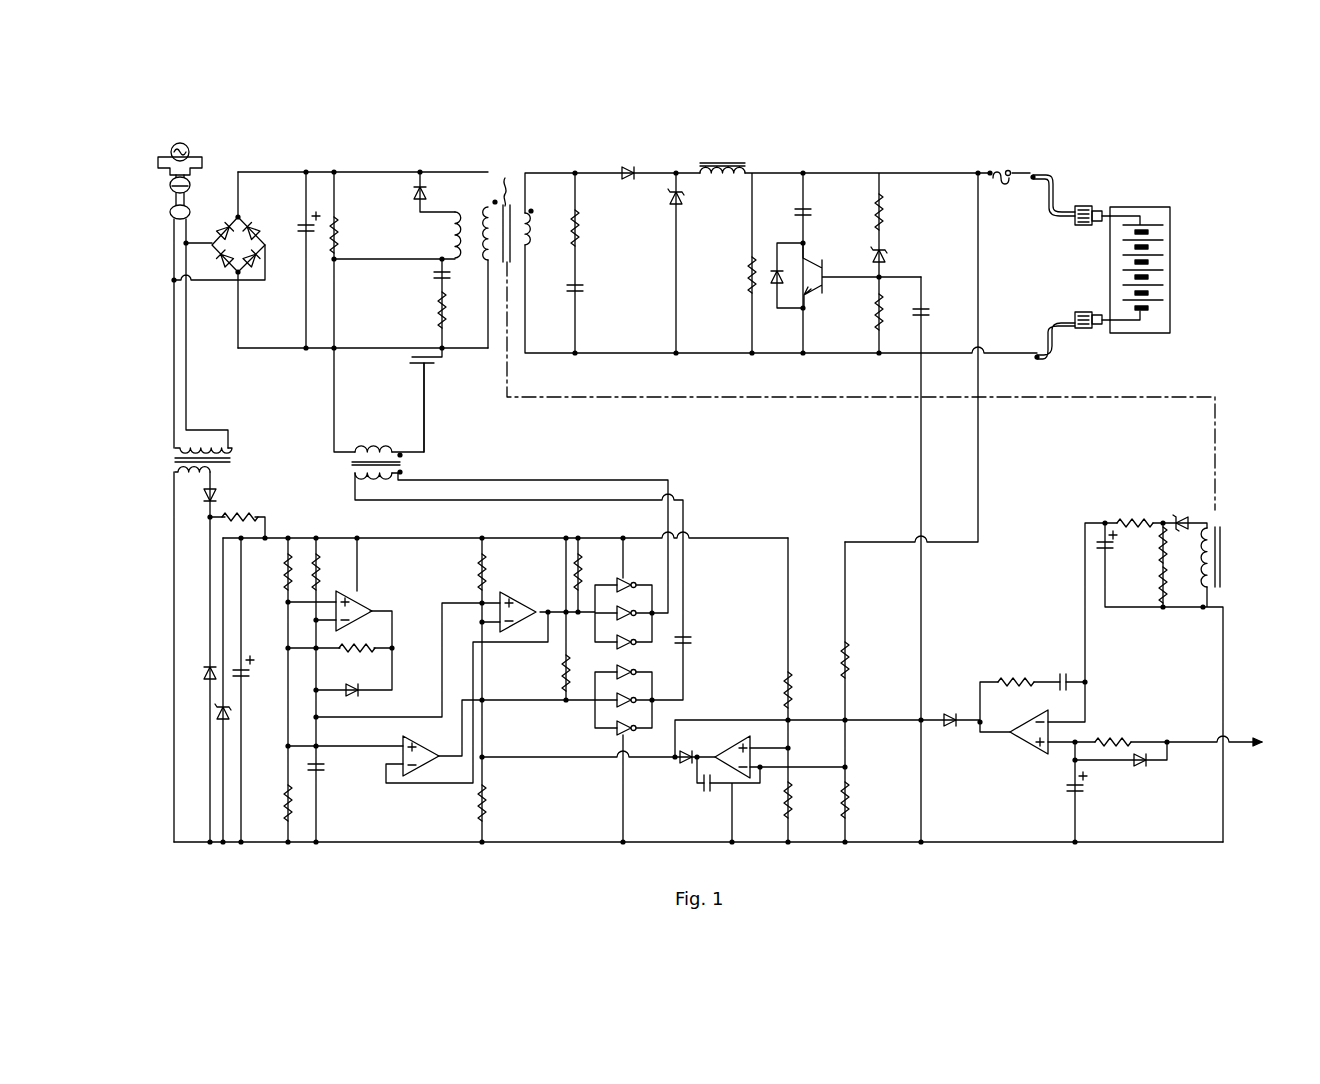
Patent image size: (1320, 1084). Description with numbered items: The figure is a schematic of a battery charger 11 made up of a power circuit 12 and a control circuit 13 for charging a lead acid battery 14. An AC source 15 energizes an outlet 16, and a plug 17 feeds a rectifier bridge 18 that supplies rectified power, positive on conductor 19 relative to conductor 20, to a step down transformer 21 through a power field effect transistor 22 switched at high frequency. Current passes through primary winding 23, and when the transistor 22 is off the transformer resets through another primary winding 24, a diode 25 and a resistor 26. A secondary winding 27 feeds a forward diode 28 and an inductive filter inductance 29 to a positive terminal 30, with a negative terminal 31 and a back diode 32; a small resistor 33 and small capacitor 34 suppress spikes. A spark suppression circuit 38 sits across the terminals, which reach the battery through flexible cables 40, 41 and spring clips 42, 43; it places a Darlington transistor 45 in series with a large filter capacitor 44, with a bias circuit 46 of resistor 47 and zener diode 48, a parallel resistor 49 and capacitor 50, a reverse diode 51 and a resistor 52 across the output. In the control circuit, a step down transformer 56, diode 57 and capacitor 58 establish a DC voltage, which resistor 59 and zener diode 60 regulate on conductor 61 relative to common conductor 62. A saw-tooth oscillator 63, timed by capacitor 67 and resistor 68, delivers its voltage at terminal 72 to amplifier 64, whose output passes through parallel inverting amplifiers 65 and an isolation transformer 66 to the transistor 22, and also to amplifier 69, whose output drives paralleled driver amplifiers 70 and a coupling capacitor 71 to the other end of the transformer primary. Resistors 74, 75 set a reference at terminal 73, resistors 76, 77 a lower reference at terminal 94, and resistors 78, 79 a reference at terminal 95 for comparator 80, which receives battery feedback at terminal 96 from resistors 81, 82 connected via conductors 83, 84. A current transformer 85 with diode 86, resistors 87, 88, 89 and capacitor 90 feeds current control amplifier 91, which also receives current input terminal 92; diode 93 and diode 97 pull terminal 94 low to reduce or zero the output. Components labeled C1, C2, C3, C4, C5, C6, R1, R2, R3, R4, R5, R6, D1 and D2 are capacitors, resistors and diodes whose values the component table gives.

The battery charger 11 is at (837, 477).
The power circuit 12 is at (592, 164).
The control circuit 13 is at (993, 863).
The battery 14 is at (1175, 255).
The AC source 15 is at (190, 154).
The outlet 16 is at (190, 187).
The plug 17 is at (190, 215).
The rectifier bridge 18 is at (238, 244).
The conductor 19 is at (282, 172).
The conductor 20 is at (258, 348).
The step down transformer 21 is at (510, 160).
The power field effect transistor 22 is at (428, 367).
The primary winding 23 is at (483, 258).
The primary winding 24 is at (452, 234).
The diode 25 is at (414, 198).
The resistor 26 is at (340, 218).
The secondary winding 27 is at (530, 228).
The forward diode 28 is at (630, 185).
The inductive filter inductance 29 is at (750, 170).
The charger positive terminal 30 is at (1038, 172).
The negative terminal 31 is at (1040, 360).
The back diode 32 is at (685, 200).
The small resistor 33 is at (582, 228).
The small capacitor 34 is at (582, 290).
The spark suppression circuit 38 is at (855, 234).
The flexible cable 40 is at (1062, 205).
The flexible cable 41 is at (1062, 337).
The spring battery clip 42 is at (1092, 207).
The spring battery clip 43 is at (1084, 312).
The filter capacitor 44 is at (808, 210).
The semi-conductor switch 45 is at (825, 268).
The bias circuit 46 is at (932, 254).
The resistor 47 is at (884, 215).
The zener diode 48 is at (884, 258).
The resistor 49 is at (876, 315).
The capacitor 50 is at (927, 308).
The diode 51 is at (772, 280).
The resistor 52 is at (748, 275).
The step down transformer 56 is at (240, 461).
The diode 57 is at (218, 493).
The capacitor 58 is at (207, 665).
The resistor 59 is at (245, 510).
The zener diode 60 is at (230, 713).
The conductor 61 is at (390, 537).
The common conductor 62 is at (382, 843).
The oscillator 63 is at (365, 605).
The amplifier 64 is at (524, 606).
The inverting amplifiers 65 is at (625, 610).
The isolation transformer 66 is at (405, 466).
The capacitor 67 is at (320, 770).
The resistor 68 is at (318, 570).
The amplifier 69 is at (422, 748).
The driver amplifiers 70 is at (627, 702).
The coupling capacitor 71 is at (688, 637).
The terminal 72 is at (312, 628).
The terminal 73 is at (287, 601).
The resistor 74 is at (287, 572).
The resistor 75 is at (287, 803).
The resistor 76 is at (486, 572).
The resistor 77 is at (487, 805).
The resistor 78 is at (792, 675).
The resistor 79 is at (792, 805).
The amplifier 80 is at (738, 745).
The resistor 81 is at (850, 663).
The resistor 82 is at (850, 805).
The conductor 83 is at (980, 465).
The conductor 84 is at (923, 484).
The current transformer 85 is at (1204, 550).
The diode 86 is at (1183, 515).
The resistor 87 is at (1160, 548).
The resistor 88 is at (1160, 590).
The resistor 89 is at (1132, 515).
The capacitor 90 is at (1110, 548).
The current control amplifier 91 is at (1022, 745).
The current input terminal 92 is at (1262, 740).
The diode 93 is at (949, 712).
The terminal 94 is at (487, 756).
The terminal 95 is at (790, 748).
The terminal 96 is at (850, 766).
The diode 97 is at (680, 762).
The capacitor C1 is at (300, 232).
The capacitor C2 is at (436, 275).
The capacitor C3 is at (248, 675).
The capacitor C4 is at (704, 790).
The capacitor C5 is at (1060, 680).
The capacitor C6 is at (1078, 793).
The resistor R1 is at (436, 310).
The resistor R2 is at (360, 650).
The resistor R3 is at (582, 572).
The resistor R4 is at (563, 670).
The resistor R5 is at (1012, 680).
The resistor R6 is at (1118, 738).
The diode D1 is at (350, 688).
The diode D2 is at (1142, 766).